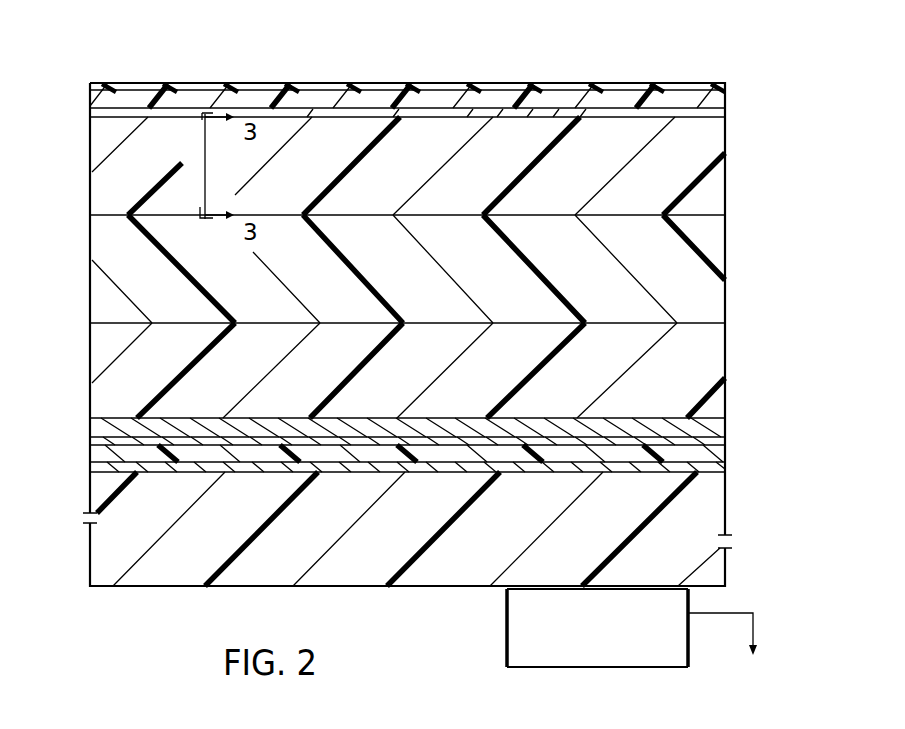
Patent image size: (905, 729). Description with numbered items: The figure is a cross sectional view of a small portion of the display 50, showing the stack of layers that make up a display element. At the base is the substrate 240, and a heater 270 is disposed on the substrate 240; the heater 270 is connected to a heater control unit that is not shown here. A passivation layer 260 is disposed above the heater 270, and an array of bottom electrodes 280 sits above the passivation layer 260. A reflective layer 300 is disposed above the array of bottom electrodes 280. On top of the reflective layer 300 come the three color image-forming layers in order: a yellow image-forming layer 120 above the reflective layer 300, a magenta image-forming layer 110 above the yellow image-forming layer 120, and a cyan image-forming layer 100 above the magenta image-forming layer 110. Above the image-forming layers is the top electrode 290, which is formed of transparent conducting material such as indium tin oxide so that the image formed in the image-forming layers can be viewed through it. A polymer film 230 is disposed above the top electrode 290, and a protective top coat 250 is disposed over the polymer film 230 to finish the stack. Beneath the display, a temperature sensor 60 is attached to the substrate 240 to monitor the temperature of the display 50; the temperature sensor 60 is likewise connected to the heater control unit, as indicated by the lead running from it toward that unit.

The display 50 is at (97, 68).
The protective top coat 250 is at (172, 88).
The polymer film 230 is at (92, 100).
The top electrode 290 is at (93, 115).
The cyan image-forming layer 100 is at (97, 193).
The magenta image-forming layer 110 is at (100, 285).
The yellow image-forming layer 120 is at (98, 368).
The reflective layer 300 is at (100, 428).
The array of bottom electrodes 280 is at (725, 443).
The heater 270 is at (725, 467).
The passivation layer 260 is at (100, 457).
The substrate 240 is at (710, 500).
The temperature sensor 60 is at (507, 630).